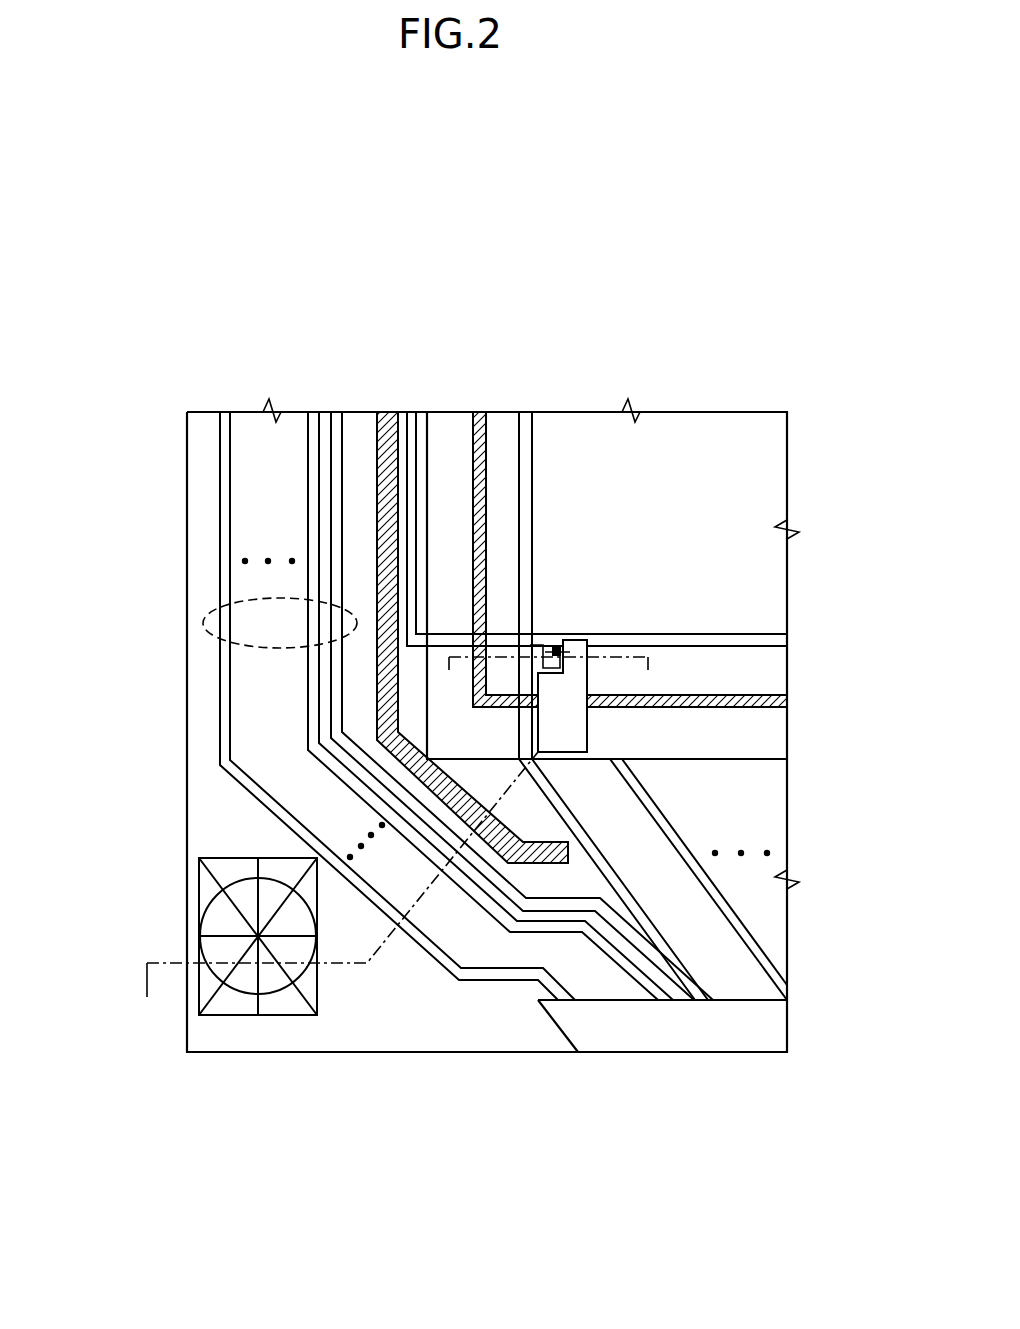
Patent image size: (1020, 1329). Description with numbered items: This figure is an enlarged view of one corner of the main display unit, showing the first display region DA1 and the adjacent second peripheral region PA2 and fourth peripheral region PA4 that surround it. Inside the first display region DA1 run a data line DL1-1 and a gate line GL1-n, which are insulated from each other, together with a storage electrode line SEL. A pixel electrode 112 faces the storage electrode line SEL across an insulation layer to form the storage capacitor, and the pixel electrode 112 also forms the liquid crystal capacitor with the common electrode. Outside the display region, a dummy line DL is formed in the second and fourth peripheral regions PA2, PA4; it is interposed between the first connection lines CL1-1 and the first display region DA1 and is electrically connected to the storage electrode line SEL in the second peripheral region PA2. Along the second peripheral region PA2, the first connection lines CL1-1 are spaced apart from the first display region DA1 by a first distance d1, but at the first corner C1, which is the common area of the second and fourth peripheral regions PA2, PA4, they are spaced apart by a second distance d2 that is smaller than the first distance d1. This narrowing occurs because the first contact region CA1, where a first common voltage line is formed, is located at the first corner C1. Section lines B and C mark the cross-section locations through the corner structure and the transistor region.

The pixel electrode 112 is at (572, 688).
The second peripheral region PA2 is at (427, 406).
The first display region DA1 is at (787, 406).
The fourth peripheral region PA4 is at (797, 763).
The storage electrode line SEL is at (481, 470).
The dummy line DL is at (385, 514).
The data line DL1-1 is at (532, 553).
The gate line GL1-n is at (722, 633).
The first connection line CL1-1 is at (203, 626).
The first distance d1 is at (313, 566).
The second distance d2 is at (546, 865).
The section line B-B' B is at (630, 730).
The section line C-C' C is at (553, 676).
The first contact region CA1 is at (268, 1017).
The first corner C1 is at (185, 1053).